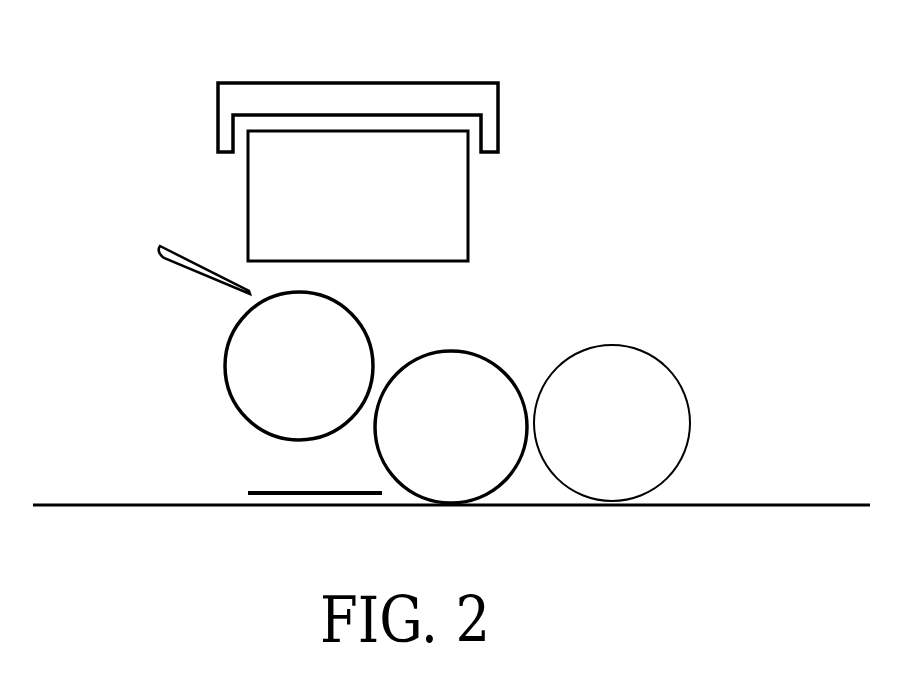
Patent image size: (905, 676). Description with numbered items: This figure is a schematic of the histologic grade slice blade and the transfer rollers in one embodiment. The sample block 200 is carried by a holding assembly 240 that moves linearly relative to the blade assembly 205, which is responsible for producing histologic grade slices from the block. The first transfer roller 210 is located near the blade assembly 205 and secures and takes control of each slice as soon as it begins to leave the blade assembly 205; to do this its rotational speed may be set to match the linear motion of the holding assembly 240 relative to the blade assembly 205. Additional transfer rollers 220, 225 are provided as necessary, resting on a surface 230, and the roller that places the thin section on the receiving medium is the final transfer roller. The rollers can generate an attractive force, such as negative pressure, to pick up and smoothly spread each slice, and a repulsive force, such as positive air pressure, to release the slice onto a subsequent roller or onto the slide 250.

The sample block 200 is at (247, 172).
The blade assembly 205 is at (177, 263).
The first transfer roller 210 is at (227, 357).
The additional transfer roller 220 is at (483, 350).
The additional transfer roller 225 is at (675, 380).
The substrate / ground surface 230 is at (143, 505).
The holding assembly 240 is at (498, 82).
The slide 250 is at (270, 490).